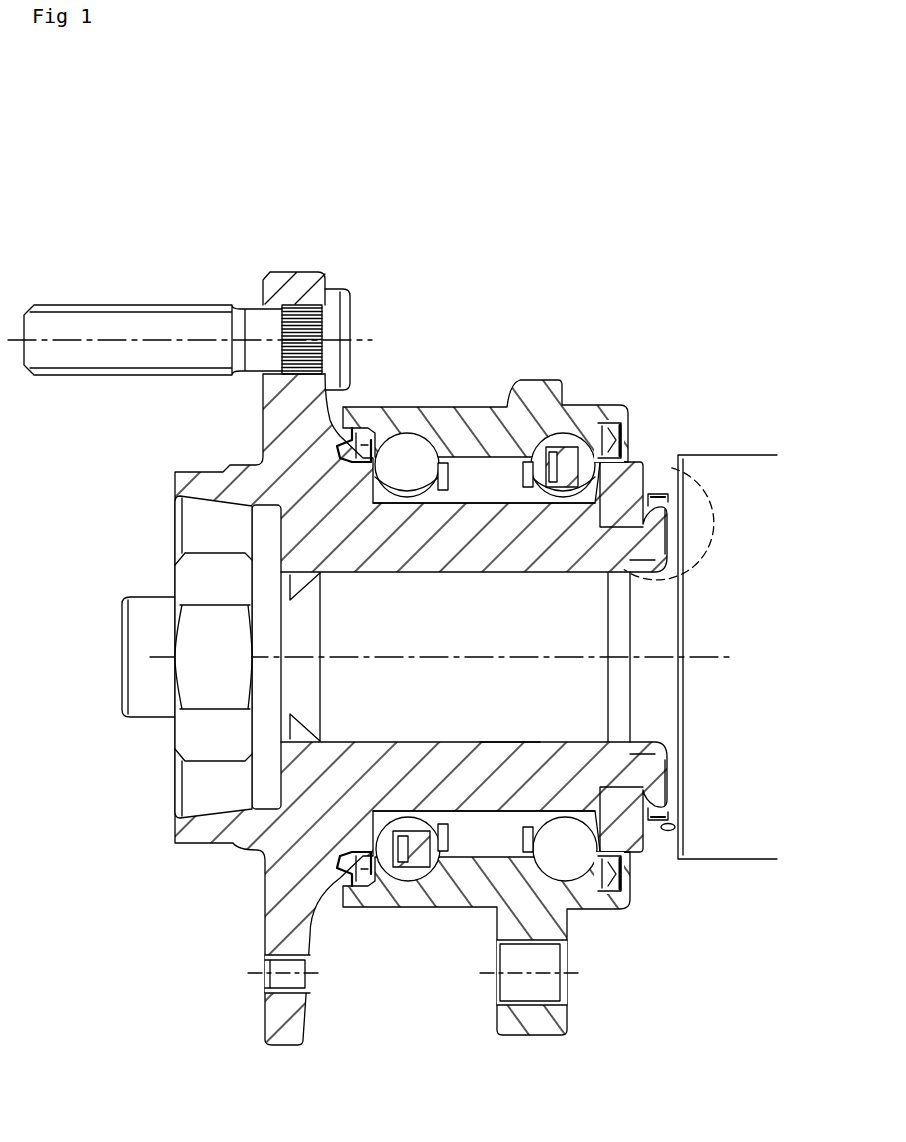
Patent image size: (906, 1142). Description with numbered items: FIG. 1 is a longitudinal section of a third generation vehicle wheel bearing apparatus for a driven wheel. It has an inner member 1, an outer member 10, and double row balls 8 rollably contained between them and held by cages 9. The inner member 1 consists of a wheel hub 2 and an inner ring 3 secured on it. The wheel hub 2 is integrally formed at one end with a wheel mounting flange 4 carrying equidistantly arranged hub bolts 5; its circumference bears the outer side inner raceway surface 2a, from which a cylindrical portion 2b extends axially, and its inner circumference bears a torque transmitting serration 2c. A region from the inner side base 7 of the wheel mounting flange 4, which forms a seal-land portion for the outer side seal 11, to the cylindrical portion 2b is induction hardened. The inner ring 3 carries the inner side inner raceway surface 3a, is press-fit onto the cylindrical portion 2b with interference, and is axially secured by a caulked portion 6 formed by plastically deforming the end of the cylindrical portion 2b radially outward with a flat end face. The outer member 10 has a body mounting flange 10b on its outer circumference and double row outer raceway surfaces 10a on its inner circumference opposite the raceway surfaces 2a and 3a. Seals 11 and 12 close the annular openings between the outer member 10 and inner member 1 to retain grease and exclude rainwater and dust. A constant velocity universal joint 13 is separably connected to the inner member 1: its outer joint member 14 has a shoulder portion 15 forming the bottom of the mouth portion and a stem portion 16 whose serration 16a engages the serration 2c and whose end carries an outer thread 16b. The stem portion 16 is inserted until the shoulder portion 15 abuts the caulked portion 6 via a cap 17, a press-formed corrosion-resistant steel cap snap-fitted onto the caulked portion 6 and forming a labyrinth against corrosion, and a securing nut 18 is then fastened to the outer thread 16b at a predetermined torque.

The inner member 1 is at (247, 800).
The wheel hub 2 is at (298, 530).
The inner raceway surface 2a is at (416, 495).
The cylindrical portion 2b is at (606, 525).
The serration 2c is at (352, 576).
The inner ring 3 is at (626, 455).
The inner raceway surface 3a is at (556, 488).
The wheel mounting flange 4 is at (285, 272).
The hub bolt 5 is at (120, 320).
The caulked portion 6 is at (658, 790).
The inner side base 7 is at (335, 423).
The balls 8 is at (550, 866).
The cage 9 is at (528, 830).
The outer member 10 is at (482, 404).
The outer raceway surface 10a is at (410, 452).
The body mounting flange 10b is at (540, 1032).
The outer side seal 11 is at (340, 884).
The seal 12 is at (622, 878).
The constant velocity universal joint 13 is at (752, 422).
The outer joint member 14 is at (704, 452).
The shoulder portion 15 is at (672, 827).
The stem portion 16 is at (436, 692).
The serration 16a is at (508, 742).
The outer thread 16b is at (140, 618).
The cap 17 is at (658, 492).
The securing nut 18 is at (186, 578).